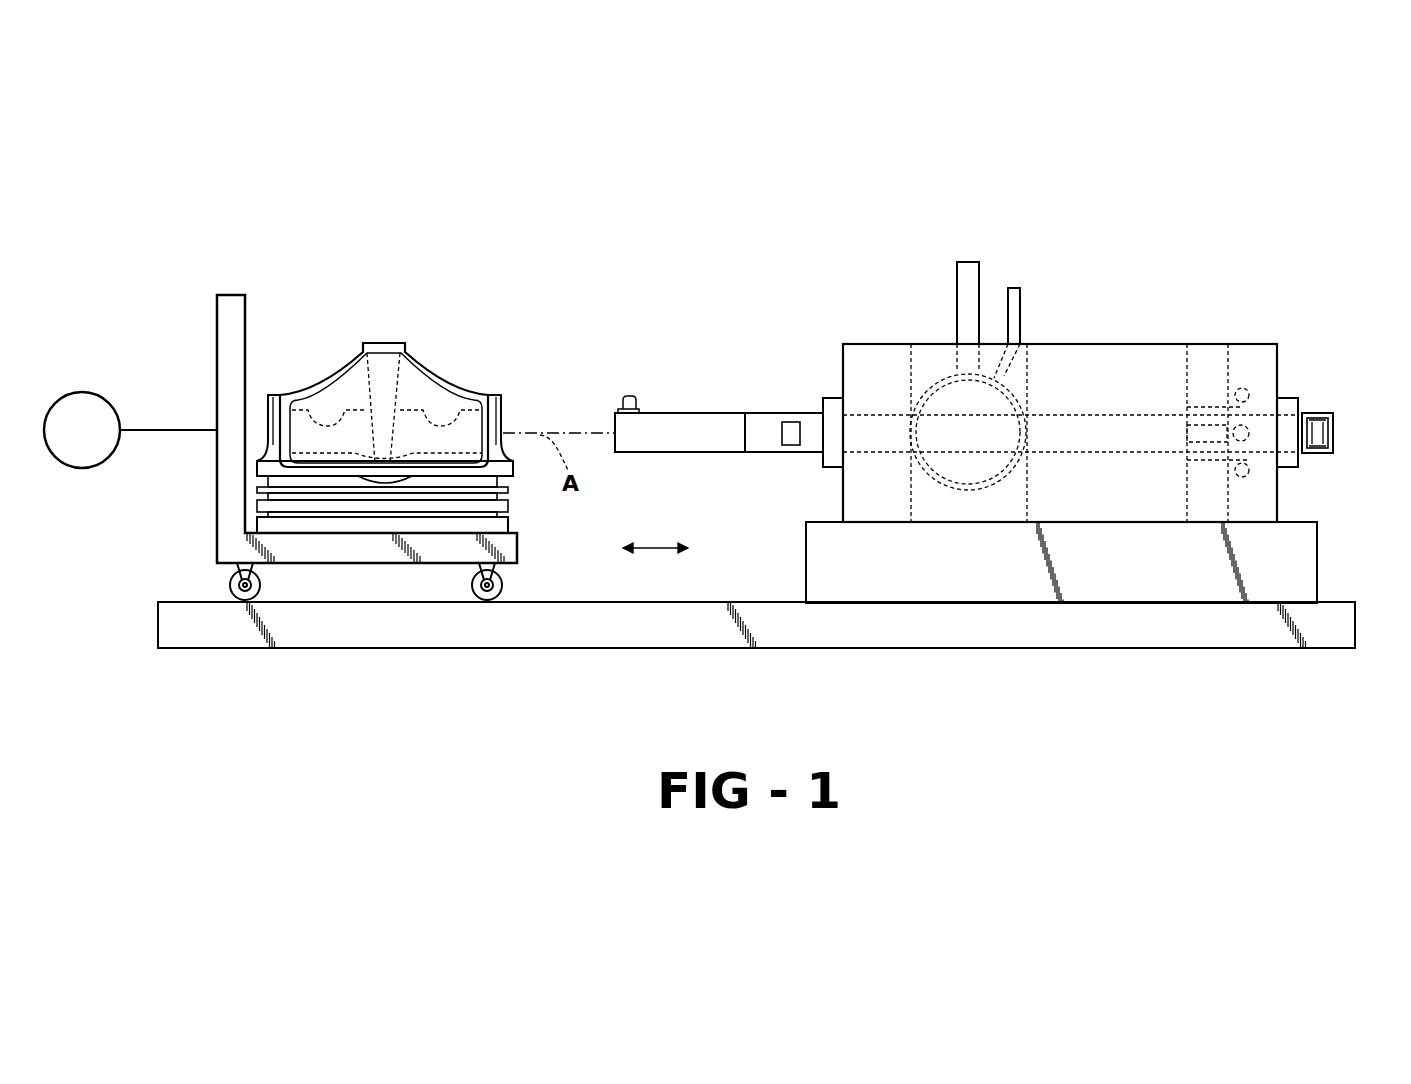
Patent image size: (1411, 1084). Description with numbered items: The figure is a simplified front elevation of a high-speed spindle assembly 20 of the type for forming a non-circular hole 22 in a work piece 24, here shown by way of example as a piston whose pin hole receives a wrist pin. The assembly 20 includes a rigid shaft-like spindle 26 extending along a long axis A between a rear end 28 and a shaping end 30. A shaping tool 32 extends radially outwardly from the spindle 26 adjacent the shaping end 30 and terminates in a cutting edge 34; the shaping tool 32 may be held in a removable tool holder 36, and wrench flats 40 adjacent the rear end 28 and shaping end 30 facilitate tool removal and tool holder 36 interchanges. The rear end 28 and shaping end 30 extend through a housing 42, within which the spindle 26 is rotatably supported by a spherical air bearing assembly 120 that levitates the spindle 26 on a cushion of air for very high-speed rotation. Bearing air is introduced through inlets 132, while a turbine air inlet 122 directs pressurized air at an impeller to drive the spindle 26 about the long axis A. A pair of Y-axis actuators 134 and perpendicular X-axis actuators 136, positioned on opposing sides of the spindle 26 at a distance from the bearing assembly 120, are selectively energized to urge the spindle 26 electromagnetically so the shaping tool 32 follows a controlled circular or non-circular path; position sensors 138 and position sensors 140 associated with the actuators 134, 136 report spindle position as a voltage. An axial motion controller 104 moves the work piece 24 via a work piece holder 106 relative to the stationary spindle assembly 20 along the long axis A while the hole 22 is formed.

The high-speed spindle assembly 20 is at (1141, 260).
The non-circular hole 22 is at (313, 402).
The work piece 24 is at (376, 343).
The spindle 26 is at (708, 413).
The rear end 28 is at (1333, 433).
The shaping end 30 is at (613, 422).
The shaping tool 32 is at (637, 407).
The cutting edge 34 is at (628, 397).
The tool holder 36 is at (632, 452).
The wrench flats 40 is at (790, 423).
The housing 42 is at (1075, 344).
The axial motion controller 104 is at (77, 390).
The work piece holder 106 is at (217, 470).
The spherical air bearing assembly 120 is at (892, 377).
The turbine air inlet 122 is at (962, 295).
The inlets 132 is at (1022, 303).
The Y-axis actuators 134 is at (1188, 403).
The X-axis actuators 136 is at (1188, 430).
The position sensors 138 is at (1245, 395).
The position sensors 140 is at (1250, 425).